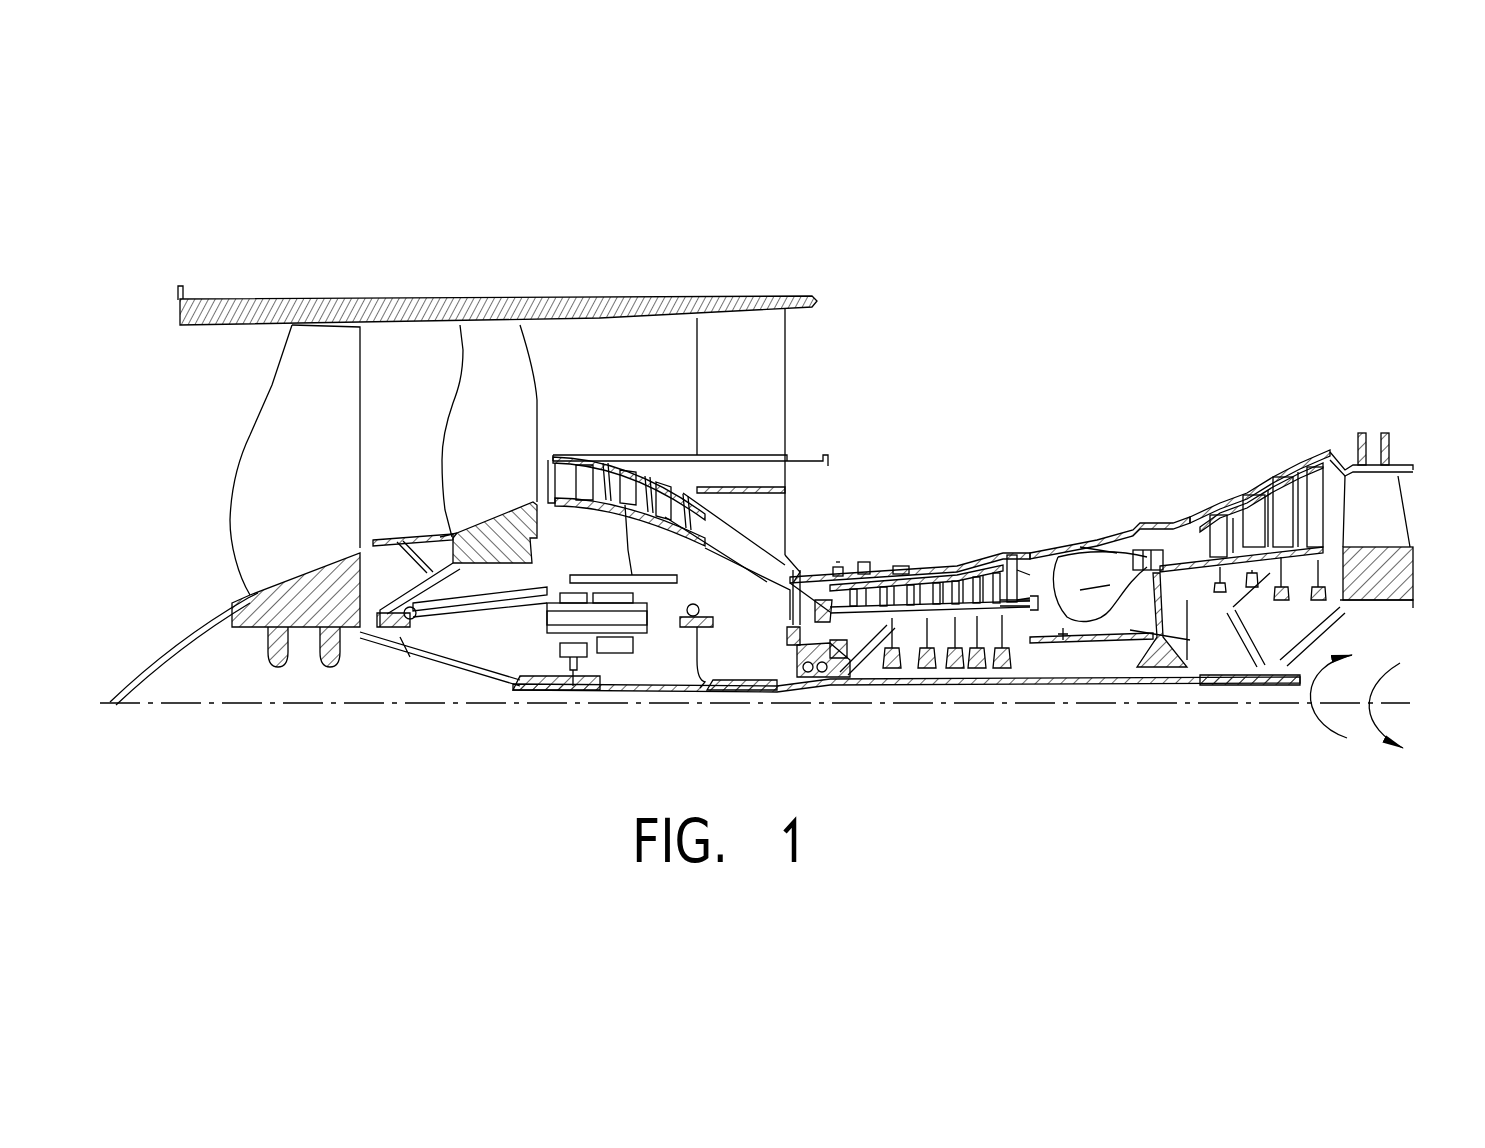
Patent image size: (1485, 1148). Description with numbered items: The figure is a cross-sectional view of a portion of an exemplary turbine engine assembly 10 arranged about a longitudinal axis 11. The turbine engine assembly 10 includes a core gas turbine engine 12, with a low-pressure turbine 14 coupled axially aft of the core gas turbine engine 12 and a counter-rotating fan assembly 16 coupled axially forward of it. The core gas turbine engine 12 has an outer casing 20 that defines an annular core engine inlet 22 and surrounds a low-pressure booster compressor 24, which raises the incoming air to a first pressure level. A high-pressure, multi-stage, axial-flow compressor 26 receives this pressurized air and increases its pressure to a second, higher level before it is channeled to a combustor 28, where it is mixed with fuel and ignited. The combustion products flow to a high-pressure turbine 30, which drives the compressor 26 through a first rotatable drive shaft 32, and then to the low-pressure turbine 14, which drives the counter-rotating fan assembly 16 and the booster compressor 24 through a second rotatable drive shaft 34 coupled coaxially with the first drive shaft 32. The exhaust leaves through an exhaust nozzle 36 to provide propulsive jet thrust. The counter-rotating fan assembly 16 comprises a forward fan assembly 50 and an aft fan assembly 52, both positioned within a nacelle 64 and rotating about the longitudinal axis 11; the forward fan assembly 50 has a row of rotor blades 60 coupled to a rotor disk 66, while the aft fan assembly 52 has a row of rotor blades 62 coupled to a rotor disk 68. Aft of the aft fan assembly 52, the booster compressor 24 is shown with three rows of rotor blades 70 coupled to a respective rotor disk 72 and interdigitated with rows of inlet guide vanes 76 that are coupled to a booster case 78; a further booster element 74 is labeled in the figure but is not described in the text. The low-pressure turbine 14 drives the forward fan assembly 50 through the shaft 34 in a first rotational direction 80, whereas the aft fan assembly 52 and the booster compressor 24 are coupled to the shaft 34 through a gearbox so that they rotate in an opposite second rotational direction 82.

The turbine engine assembly 10 is at (1235, 190).
The longitudinal axis 11 is at (855, 707).
The core gas turbine engine 12 is at (1005, 533).
The low-pressure turbine 14 is at (1290, 431).
The counter-rotating fan assembly 16 is at (424, 282).
The outer casing 20 is at (833, 573).
The annular core engine inlet 22 is at (545, 464).
The low-pressure booster compressor 24 is at (622, 435).
The high-pressure multi-stage axial-flow compressor 26 is at (903, 558).
The combustor 28 is at (1078, 563).
The high-pressure turbine 30 is at (1152, 670).
The first rotatable drive shaft 32 is at (1063, 632).
The second rotatable drive shaft 34 is at (965, 680).
The exhaust nozzle 36 is at (1423, 478).
The forward fan assembly 50 is at (217, 443).
The aft fan assembly 52 is at (417, 437).
The rotor blades 60 is at (282, 479).
The rotor blades 62 is at (479, 418).
The nacelle 64 is at (615, 295).
The rotor disk 66 is at (280, 667).
The rotor disk 68 is at (516, 560).
The rotor blades 70 is at (585, 465).
The rotor disk 72 is at (605, 470).
The booster inlet 74 is at (560, 483).
The inlet guide vanes 76 is at (648, 478).
The booster case 78 is at (680, 480).
The first rotational direction 80 is at (1345, 740).
The second rotational direction 82 is at (1400, 663).